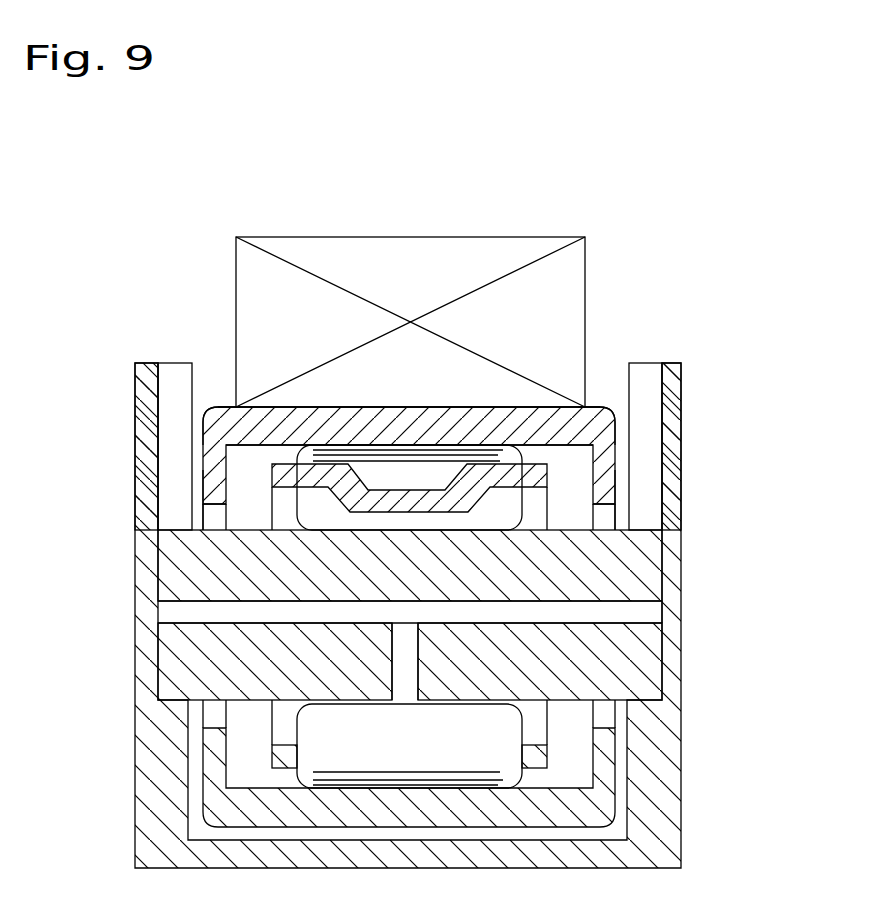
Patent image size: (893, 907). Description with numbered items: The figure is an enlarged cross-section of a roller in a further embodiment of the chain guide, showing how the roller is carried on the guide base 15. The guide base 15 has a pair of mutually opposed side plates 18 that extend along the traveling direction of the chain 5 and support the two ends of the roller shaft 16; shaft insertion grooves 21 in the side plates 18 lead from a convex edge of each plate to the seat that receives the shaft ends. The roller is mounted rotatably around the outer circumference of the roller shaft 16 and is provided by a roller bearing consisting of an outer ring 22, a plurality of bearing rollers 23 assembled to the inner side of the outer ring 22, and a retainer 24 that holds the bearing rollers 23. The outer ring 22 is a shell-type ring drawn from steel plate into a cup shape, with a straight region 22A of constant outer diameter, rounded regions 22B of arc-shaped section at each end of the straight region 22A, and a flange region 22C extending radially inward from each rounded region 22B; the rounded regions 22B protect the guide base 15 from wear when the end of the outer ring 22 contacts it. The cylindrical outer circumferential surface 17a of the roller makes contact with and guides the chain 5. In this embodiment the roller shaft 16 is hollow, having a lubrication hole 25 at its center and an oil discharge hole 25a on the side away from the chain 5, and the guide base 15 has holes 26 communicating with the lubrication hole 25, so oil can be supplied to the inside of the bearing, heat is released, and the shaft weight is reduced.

The chain 5 is at (293, 247).
The guide base 15 is at (683, 583).
The roller shaft 16 is at (180, 655).
The cylindrical outer circumferential surface 17a is at (475, 407).
The side plates 18 is at (147, 370).
The shaft insertion grooves 21 is at (158, 439).
The outer ring 22 is at (335, 407).
The straight region 22A is at (393, 407).
The rounded regions 22B is at (222, 417).
The flange region 22C is at (217, 482).
The bearing rollers 23 is at (307, 505).
The retainer 24 is at (417, 508).
The lubrication hole 25 is at (560, 614).
The oil discharge hole 25a is at (403, 663).
The holes 26 is at (673, 617).